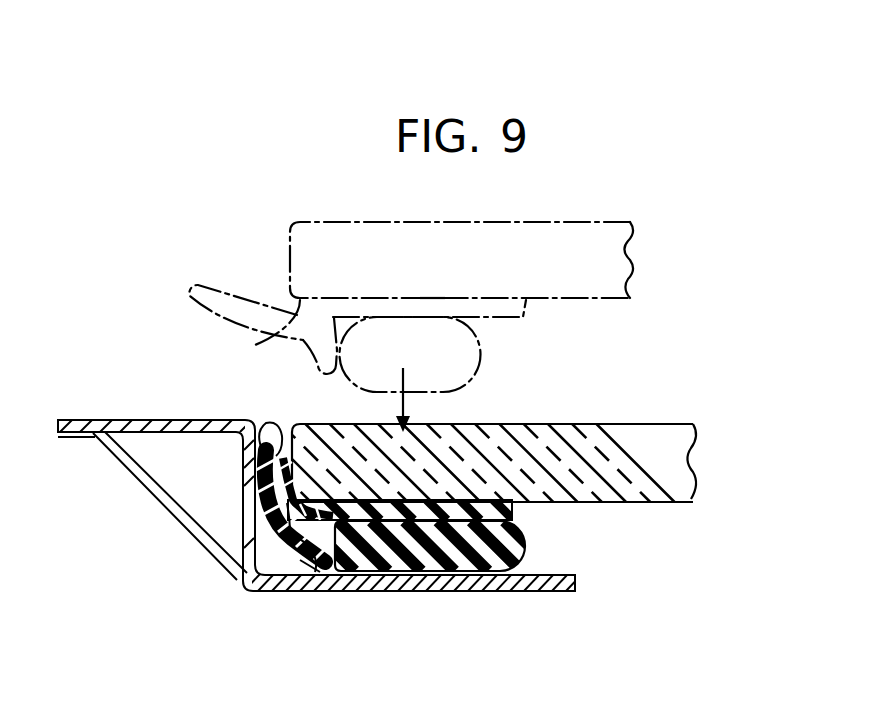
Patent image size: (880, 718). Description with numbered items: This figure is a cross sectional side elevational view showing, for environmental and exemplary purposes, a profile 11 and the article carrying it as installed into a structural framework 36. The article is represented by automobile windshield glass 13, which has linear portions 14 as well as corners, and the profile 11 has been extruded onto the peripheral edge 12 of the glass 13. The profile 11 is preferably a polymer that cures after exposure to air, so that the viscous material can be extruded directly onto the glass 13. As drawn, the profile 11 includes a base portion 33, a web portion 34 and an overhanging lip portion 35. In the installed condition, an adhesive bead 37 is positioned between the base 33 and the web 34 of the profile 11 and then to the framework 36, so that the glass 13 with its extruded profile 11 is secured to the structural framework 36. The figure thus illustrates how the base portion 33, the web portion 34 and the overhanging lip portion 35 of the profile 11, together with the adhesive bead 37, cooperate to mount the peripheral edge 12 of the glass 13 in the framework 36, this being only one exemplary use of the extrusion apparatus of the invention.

The profile 11 is at (534, 320).
The peripheral edge 12 is at (255, 345).
The automobile windshield glass 13 is at (642, 250).
The linear portions 14 is at (272, 450).
The base portion 33 is at (422, 305).
The web portion 34 is at (317, 368).
The overhanging lip portion 35 is at (218, 300).
The structural framework 36 is at (435, 583).
The adhesive bead 37 is at (468, 353).